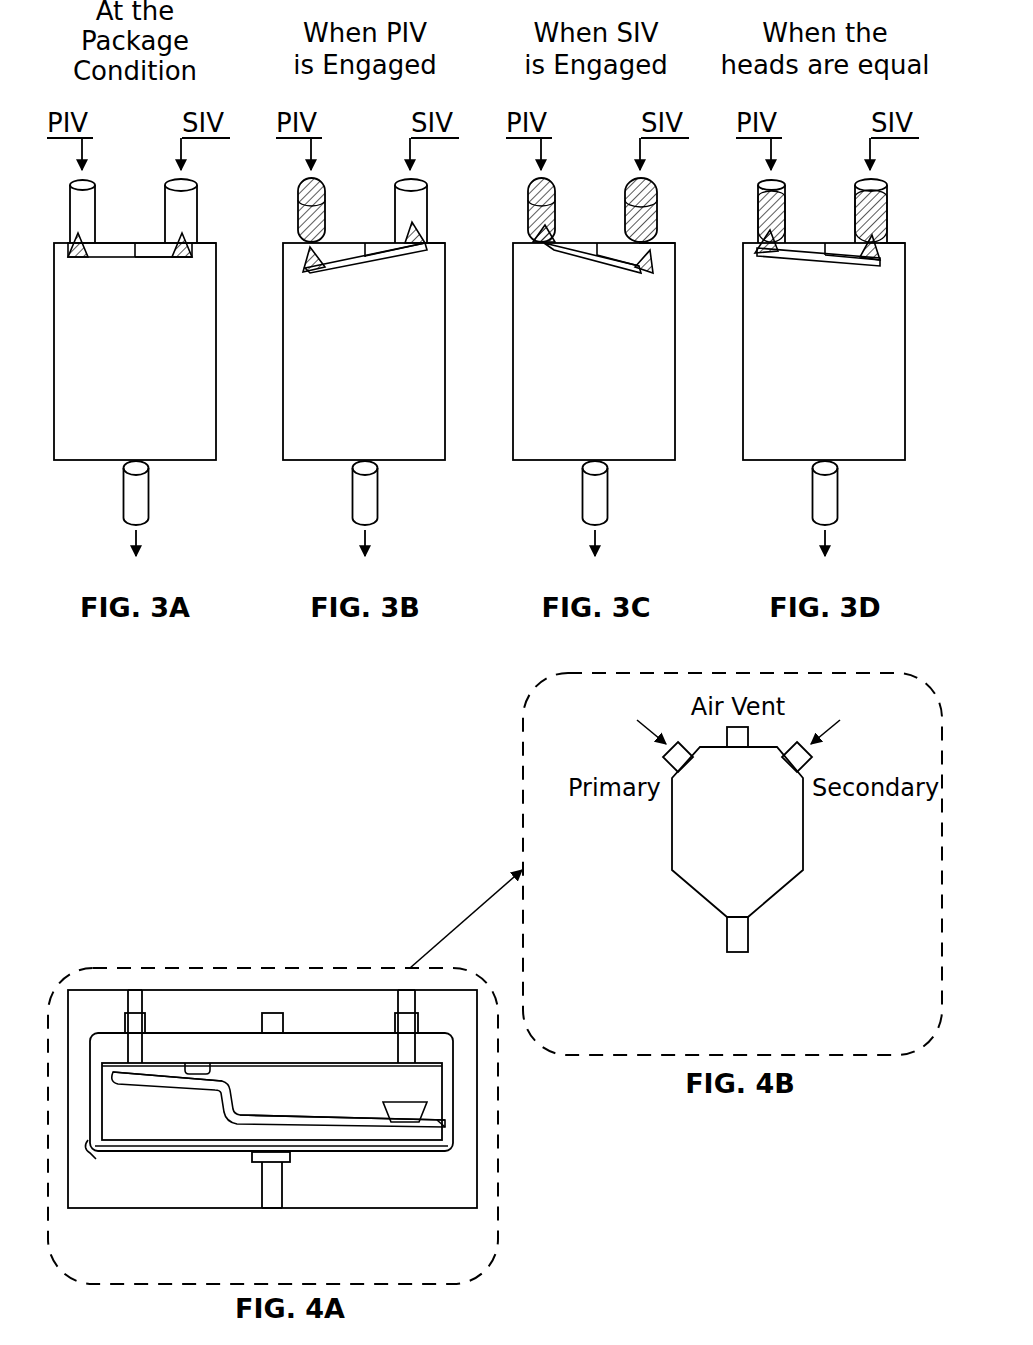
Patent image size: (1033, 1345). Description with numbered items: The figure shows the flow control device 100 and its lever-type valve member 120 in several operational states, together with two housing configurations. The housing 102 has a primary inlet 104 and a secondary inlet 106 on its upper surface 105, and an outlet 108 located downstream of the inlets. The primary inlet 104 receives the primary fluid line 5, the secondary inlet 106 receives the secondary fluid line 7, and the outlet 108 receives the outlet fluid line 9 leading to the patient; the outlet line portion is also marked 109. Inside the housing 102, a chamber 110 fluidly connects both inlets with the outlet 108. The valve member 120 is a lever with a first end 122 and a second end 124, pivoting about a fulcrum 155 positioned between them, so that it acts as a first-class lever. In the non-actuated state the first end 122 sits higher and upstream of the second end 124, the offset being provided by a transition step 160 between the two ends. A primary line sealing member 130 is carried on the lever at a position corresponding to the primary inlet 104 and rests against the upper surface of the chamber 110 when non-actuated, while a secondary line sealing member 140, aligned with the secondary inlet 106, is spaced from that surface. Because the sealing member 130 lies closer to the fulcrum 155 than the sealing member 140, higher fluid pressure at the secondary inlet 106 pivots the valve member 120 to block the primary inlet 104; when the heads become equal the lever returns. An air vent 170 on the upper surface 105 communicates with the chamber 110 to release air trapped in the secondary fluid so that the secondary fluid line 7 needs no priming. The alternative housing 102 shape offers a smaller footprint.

In FIG. 3A, the primary fluid line 5 is at (80, 208).
In FIG. 3B, the primary fluid line 5 is at (292, 210).
In FIG. 3C, the primary fluid line 5 is at (522, 210).
In FIG. 3D, the primary fluid line 5 is at (752, 211).
In FIG. 4A, the primary fluid line 5 is at (128, 1000).
In FIG. 4B, the primary fluid line 5 is at (668, 757).
In FIG. 3A, the secondary fluid line 7 is at (198, 215).
In FIG. 3B, the secondary fluid line 7 is at (423, 197).
In FIG. 3C, the secondary fluid line 7 is at (659, 197).
In FIG. 3D, the secondary fluid line 7 is at (889, 197).
In FIG. 4A, the secondary fluid line 7 is at (415, 1007).
In FIG. 4B, the secondary fluid line 7 is at (822, 757).
In FIG. 3A, the outlet fluid line 9 is at (150, 500).
In FIG. 3B, the outlet fluid line 9 is at (399, 528).
In FIG. 3C, the outlet fluid line 9 is at (629, 528).
In FIG. 3D, the outlet fluid line 9 is at (859, 528).
In FIG. 4A, the outlet fluid line 9 is at (262, 1198).
In FIG. 4B, the outlet fluid line 9 is at (727, 935).
In FIG. 4A, the flow control device 100 is at (126, 882).
In FIG. 3A, the housing 102 is at (56, 356).
In FIG. 3B, the housing 102 is at (363, 351).
In FIG. 3C, the housing 102 is at (593, 351).
In FIG. 3D, the housing 102 is at (823, 351).
In FIG. 4A, the housing 102 is at (85, 1135).
In FIG. 4B, the housing 102 is at (805, 843).
In FIG. 3A, the primary inlet 104 is at (72, 262).
In FIG. 3B, the primary inlet 104 is at (318, 282).
In FIG. 3C, the primary inlet 104 is at (540, 273).
In FIG. 3D, the primary inlet 104 is at (777, 274).
In FIG. 4A, the primary inlet 104 is at (152, 1028).
In FIG. 4B, the primary inlet 104 is at (683, 768).
In FIG. 4A, the upper surface 105 is at (315, 1032).
In FIG. 3A, the secondary inlet 106 is at (200, 247).
In FIG. 3B, the secondary inlet 106 is at (461, 228).
In FIG. 3C, the secondary inlet 106 is at (685, 257).
In FIG. 3D, the secondary inlet 106 is at (914, 282).
In FIG. 4A, the secondary inlet 106 is at (392, 1028).
In FIG. 4B, the secondary inlet 106 is at (793, 768).
In FIG. 3A, the outlet 108 is at (125, 480).
In FIG. 3B, the outlet 108 is at (327, 493).
In FIG. 3C, the outlet 108 is at (557, 493).
In FIG. 3D, the outlet 108 is at (787, 493).
In FIG. 4A, the outlet 108 is at (253, 1158).
In FIG. 4B, the outlet 108 is at (735, 917).
In FIG. 4A, the outlet tubing 109 is at (327, 1153).
In FIG. 3A, the chamber 110 is at (100, 408).
In FIG. 3B, the chamber 110 is at (304, 453).
In FIG. 3C, the chamber 110 is at (534, 453).
In FIG. 3D, the chamber 110 is at (764, 453).
In FIG. 4A, the chamber 110 is at (430, 1077).
In FIG. 4B, the chamber 110 is at (690, 829).
In FIG. 3A, the valve member 120 is at (160, 258).
In FIG. 3B, the valve member 120 is at (399, 280).
In FIG. 3C, the valve member 120 is at (613, 293).
In FIG. 3D, the valve member 120 is at (848, 292).
In FIG. 4A, the valve member 120 is at (368, 1125).
In FIG. 4A, the first end 122 is at (116, 1086).
In FIG. 4A, the second end 124 is at (434, 1128).
In FIG. 3A, the primary line sealing member 130 is at (75, 256).
In FIG. 3B, the primary line sealing member 130 is at (366, 272).
In FIG. 3C, the primary line sealing member 130 is at (591, 272).
In FIG. 3D, the primary line sealing member 130 is at (818, 268).
In FIG. 4A, the primary line sealing member 130 is at (138, 1066).
In FIG. 3A, the secondary line sealing member 140 is at (200, 260).
In FIG. 3B, the secondary line sealing member 140 is at (451, 246).
In FIG. 3C, the secondary line sealing member 140 is at (646, 302).
In FIG. 3D, the secondary line sealing member 140 is at (871, 293).
In FIG. 4A, the secondary line sealing member 140 is at (415, 1110).
In FIG. 3A, the fulcrum 155 is at (147, 242).
In FIG. 3B, the fulcrum 155 is at (356, 212).
In FIG. 3C, the fulcrum 155 is at (586, 211).
In FIG. 3D, the fulcrum 155 is at (816, 211).
In FIG. 4A, the fulcrum 155 is at (197, 1063).
In FIG. 4A, the transition step 160 is at (247, 1104).
In FIG. 4A, the air vent 170 is at (273, 1013).
In FIG. 4B, the air vent 170 is at (748, 740).